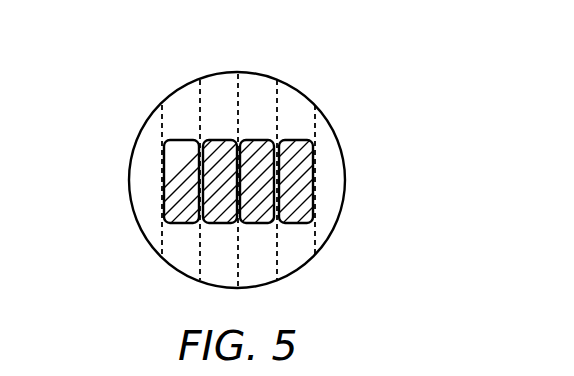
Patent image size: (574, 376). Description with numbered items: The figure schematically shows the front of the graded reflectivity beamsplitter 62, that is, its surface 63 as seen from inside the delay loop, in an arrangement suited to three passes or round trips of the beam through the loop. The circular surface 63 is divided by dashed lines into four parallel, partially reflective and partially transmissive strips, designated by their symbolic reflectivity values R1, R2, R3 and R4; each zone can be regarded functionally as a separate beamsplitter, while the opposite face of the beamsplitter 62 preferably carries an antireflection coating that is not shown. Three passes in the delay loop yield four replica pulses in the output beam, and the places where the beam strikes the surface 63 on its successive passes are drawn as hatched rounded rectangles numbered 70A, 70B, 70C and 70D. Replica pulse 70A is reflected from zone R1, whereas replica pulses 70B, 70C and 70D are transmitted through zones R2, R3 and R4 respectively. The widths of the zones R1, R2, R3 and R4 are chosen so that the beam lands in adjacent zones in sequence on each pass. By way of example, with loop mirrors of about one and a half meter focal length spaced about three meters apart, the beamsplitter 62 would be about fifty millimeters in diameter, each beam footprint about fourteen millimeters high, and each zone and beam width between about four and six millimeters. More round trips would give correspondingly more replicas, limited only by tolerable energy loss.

The graded reflectivity beamsplitter 62 is at (157, 270).
The surface 63 is at (297, 251).
The replica pulse 70A is at (308, 182).
The replica pulse 70B is at (265, 211).
The replica pulse 70C is at (168, 148).
The replica pulse 70D is at (178, 184).
The reflectivity zone R1 is at (299, 178).
The reflectivity zone R2 is at (261, 180).
The reflectivity zone R3 is at (223, 180).
The reflectivity zone R4 is at (181, 180).